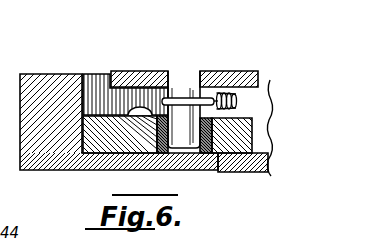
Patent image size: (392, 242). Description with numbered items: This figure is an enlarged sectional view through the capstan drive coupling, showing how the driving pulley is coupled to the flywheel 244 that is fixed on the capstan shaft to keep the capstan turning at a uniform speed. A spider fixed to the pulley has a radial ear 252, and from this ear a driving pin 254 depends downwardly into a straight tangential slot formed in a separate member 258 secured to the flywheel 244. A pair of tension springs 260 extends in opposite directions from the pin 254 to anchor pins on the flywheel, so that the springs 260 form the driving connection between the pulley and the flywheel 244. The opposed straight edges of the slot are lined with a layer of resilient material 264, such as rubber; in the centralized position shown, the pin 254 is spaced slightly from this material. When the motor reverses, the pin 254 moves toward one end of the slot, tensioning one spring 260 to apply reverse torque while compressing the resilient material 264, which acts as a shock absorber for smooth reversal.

The flywheel 244 is at (30, 80).
The radial ear 252 is at (113, 75).
The driving pin 254 is at (178, 75).
The separate member 258 is at (113, 143).
The tension spring 260 is at (223, 95).
The resilient material 264 is at (218, 172).